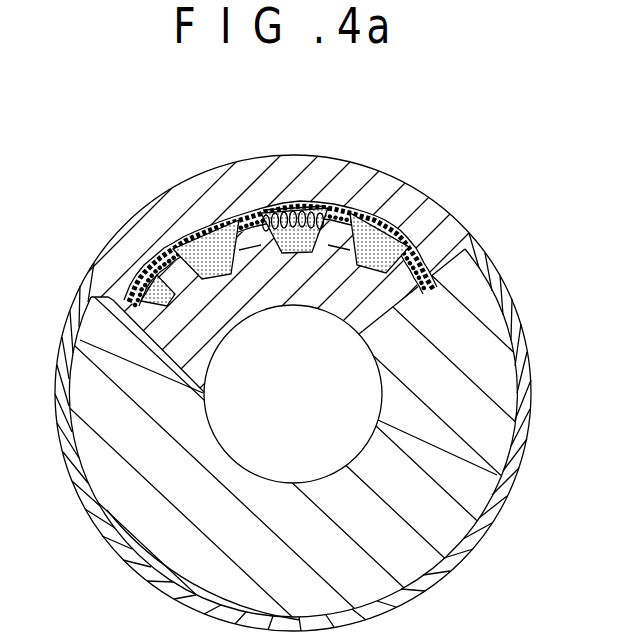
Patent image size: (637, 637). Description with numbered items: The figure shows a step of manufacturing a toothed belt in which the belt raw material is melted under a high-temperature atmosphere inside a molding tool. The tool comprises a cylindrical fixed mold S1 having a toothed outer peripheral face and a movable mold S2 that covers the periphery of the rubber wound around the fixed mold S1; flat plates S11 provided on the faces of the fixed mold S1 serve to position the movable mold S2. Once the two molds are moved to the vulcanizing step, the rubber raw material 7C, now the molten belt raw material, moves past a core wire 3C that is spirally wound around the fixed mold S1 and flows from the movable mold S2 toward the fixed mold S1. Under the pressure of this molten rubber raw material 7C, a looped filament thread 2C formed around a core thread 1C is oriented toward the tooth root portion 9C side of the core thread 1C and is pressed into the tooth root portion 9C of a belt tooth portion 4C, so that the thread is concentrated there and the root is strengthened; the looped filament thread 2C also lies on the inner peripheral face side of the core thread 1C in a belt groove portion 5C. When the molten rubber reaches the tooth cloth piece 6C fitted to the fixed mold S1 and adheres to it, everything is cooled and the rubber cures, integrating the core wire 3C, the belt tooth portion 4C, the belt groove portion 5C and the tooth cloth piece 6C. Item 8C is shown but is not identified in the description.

The core thread 1C is at (299, 156).
The looped filament thread 2C is at (331, 207).
The core wire 3C is at (257, 240).
The belt tooth portion 4C is at (177, 263).
The belt groove portion 5C is at (258, 270).
The tooth cloth piece 6C is at (410, 230).
The rubber raw material 7C is at (187, 243).
The intermediate layer 8C is at (240, 212).
The tooth root portion 9C is at (268, 203).
The fixed mold S1 is at (390, 312).
The movable mold S2 is at (110, 277).
The flat plate S11 is at (483, 431).